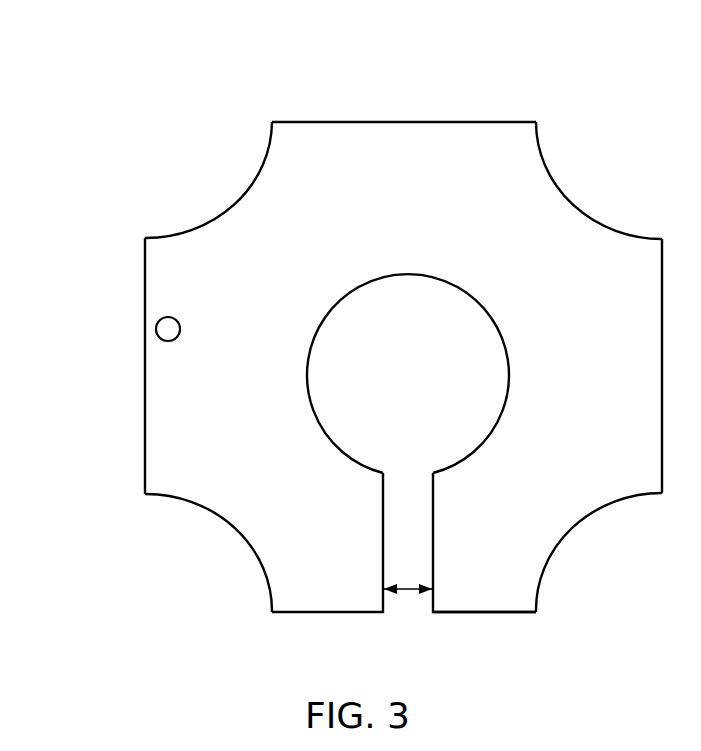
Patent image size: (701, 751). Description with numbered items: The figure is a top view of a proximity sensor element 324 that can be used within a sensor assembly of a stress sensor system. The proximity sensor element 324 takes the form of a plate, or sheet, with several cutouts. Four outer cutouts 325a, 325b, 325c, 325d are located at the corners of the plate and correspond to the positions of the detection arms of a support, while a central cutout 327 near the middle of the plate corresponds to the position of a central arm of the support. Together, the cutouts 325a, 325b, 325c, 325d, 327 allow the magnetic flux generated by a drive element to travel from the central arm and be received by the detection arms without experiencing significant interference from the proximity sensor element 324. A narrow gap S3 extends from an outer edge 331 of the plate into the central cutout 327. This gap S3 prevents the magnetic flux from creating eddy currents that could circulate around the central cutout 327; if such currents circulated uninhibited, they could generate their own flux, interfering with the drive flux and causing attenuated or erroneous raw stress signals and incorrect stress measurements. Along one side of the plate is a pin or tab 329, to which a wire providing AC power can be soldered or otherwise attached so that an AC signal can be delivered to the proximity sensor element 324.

The proximity sensor element 324 is at (140, 76).
The outer cutout 325a is at (594, 220).
The outer cutout 325b is at (585, 522).
The outer cutout 325c is at (222, 520).
The outer cutout 325d is at (222, 212).
The central cutout 327 is at (311, 386).
The pin or tab 329 is at (156, 325).
The outer edge 331 is at (486, 615).
The gap S3 is at (409, 592).